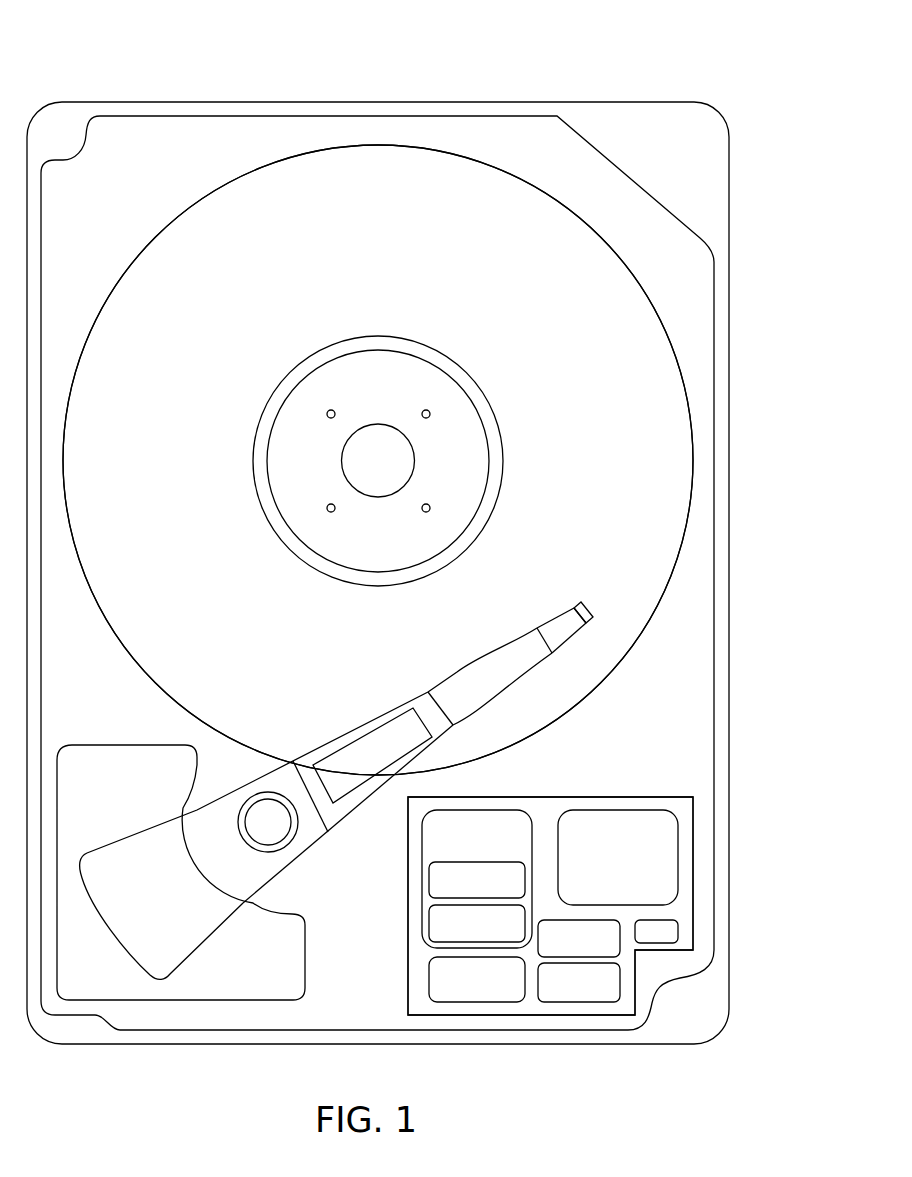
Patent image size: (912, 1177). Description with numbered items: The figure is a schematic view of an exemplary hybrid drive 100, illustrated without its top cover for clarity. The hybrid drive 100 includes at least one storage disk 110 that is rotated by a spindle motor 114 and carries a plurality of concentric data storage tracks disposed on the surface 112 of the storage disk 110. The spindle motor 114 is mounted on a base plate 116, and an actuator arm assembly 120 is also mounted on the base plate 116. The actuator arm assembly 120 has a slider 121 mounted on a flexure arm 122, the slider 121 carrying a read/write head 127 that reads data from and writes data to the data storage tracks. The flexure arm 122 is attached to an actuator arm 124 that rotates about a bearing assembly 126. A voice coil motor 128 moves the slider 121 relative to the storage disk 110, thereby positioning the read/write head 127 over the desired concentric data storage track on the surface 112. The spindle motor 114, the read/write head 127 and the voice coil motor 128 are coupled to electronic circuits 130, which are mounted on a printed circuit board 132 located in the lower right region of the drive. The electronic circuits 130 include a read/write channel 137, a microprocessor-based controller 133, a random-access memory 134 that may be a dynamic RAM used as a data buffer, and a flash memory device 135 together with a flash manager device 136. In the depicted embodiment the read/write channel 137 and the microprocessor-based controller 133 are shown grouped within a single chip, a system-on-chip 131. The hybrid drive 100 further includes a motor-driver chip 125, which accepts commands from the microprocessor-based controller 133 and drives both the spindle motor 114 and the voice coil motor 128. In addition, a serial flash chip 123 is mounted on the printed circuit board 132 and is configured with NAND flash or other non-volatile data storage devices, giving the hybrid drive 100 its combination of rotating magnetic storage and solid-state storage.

The hybrid drive 100 is at (118, 64).
The storage disk 110 is at (157, 236).
The surface 112 is at (188, 446).
The spindle motor 114 is at (473, 403).
The base plate 116 is at (715, 598).
The actuator arm assembly 120 is at (348, 630).
The slider 121 is at (593, 612).
The flexure arm 122 is at (552, 622).
The serial flash chip 123 is at (678, 930).
The actuator arm 124 is at (450, 672).
The motor-driver chip 125 is at (498, 992).
The bearing assembly 126 is at (304, 867).
The read/write head 127 is at (581, 585).
The voice coil motor 128 is at (307, 943).
The electronic circuits 130 is at (556, 799).
The system-on-chip 131 is at (498, 852).
The printed circuit board 132 is at (630, 797).
The microprocessor-based controller 133 is at (498, 894).
The random-access memory 134 is at (599, 951).
The flash memory device 135 is at (638, 872).
The flash manager device 136 is at (599, 995).
The read/write channel 137 is at (498, 937).